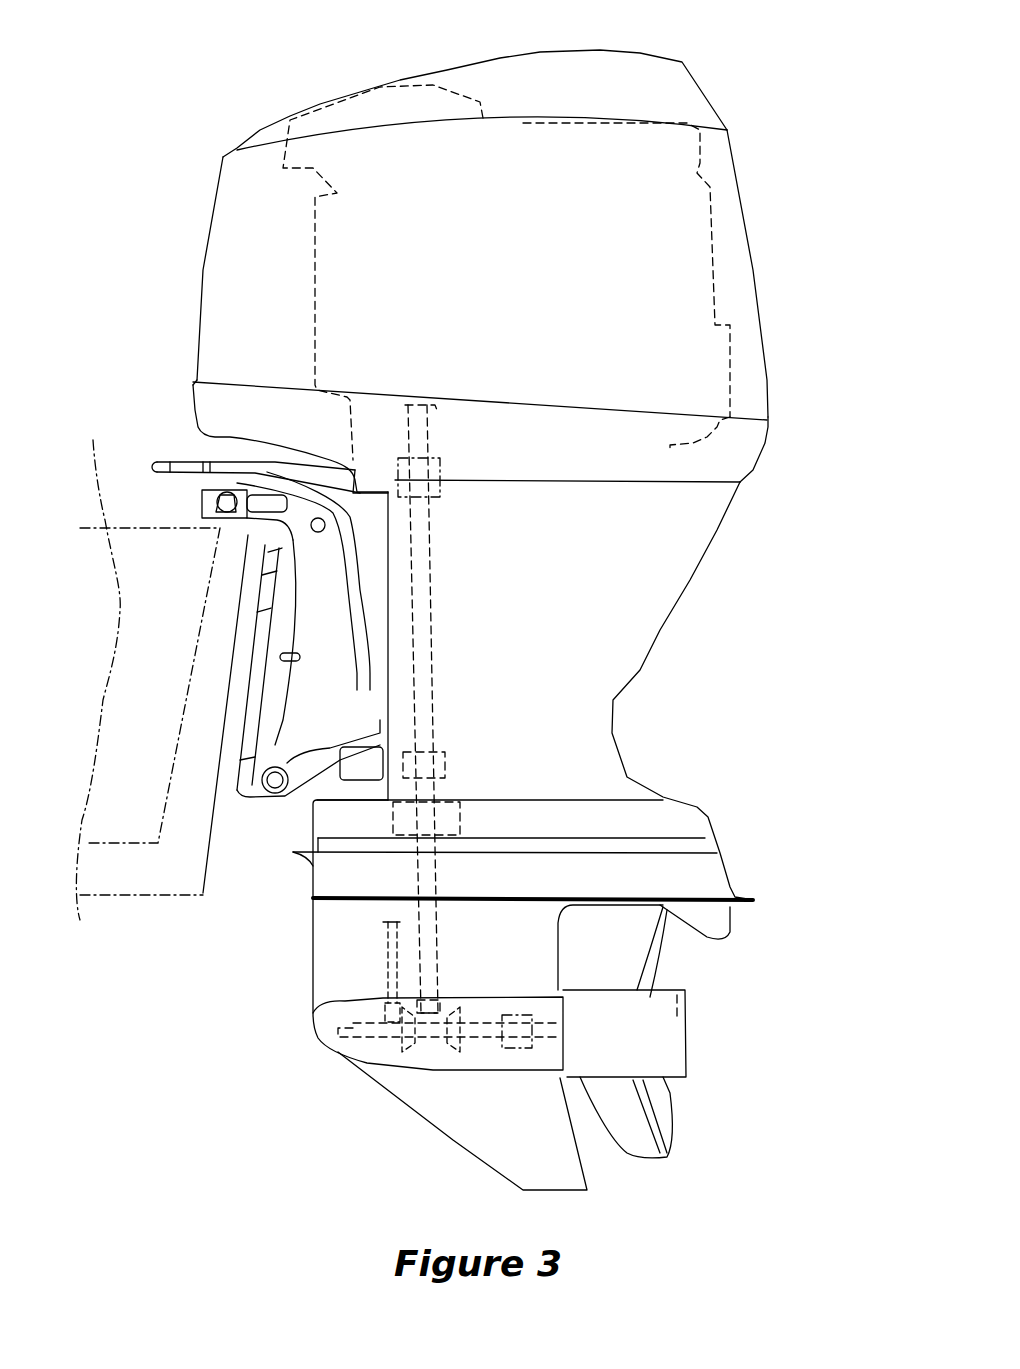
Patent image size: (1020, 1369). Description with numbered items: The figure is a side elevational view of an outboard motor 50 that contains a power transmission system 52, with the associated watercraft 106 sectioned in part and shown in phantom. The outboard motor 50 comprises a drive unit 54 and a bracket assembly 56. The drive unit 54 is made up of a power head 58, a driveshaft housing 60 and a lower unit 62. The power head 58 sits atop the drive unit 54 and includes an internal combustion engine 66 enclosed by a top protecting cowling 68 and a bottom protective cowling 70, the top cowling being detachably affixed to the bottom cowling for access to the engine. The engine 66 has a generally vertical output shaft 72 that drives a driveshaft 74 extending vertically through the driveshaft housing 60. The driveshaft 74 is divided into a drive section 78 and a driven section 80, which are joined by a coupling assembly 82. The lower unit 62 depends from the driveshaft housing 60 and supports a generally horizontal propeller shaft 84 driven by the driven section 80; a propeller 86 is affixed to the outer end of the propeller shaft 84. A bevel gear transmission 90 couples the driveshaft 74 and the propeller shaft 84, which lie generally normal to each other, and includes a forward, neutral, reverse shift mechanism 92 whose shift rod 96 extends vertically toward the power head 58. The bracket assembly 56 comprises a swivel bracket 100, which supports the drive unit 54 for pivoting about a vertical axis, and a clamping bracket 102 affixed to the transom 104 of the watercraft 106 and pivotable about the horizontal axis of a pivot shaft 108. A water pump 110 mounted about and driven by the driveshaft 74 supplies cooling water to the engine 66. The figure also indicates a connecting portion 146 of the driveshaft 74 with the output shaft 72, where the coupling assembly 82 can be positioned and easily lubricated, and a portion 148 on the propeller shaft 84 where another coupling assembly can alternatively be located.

The outboard motor 50 is at (718, 68).
The power transmission system 52 is at (480, 712).
The drive unit 54 is at (742, 608).
The bracket assembly 56 is at (262, 815).
The power head 58 is at (770, 385).
The driveshaft housing 60 is at (640, 670).
The lower unit 62 is at (318, 970).
The internal combustion engine 66 is at (313, 295).
The top protecting cowling 68 is at (752, 240).
The bottom protective cowling 70 is at (768, 440).
The output shaft 72 is at (440, 440).
The driveshaft 74 is at (435, 692).
The drive section 78 is at (433, 648).
The driven section 80 is at (435, 865).
The coupling assembly 82 is at (447, 765).
The propeller shaft 84 is at (480, 1040).
The propeller 86 is at (673, 1130).
The bevel gear transmission 90 is at (467, 1013).
The forward, neutral, reverse shift mechanism 92 is at (348, 988).
The shift rod 96 is at (387, 972).
The swivel bracket 100 is at (377, 547).
The clamping bracket 102 is at (340, 607).
The transom 104 is at (197, 723).
The watercraft 106 is at (93, 656).
The pivot shaft 108 is at (207, 502).
The water pump 110 is at (460, 825).
The connecting portion 146 is at (440, 487).
The portion on the propeller shaft 148 is at (517, 1057).